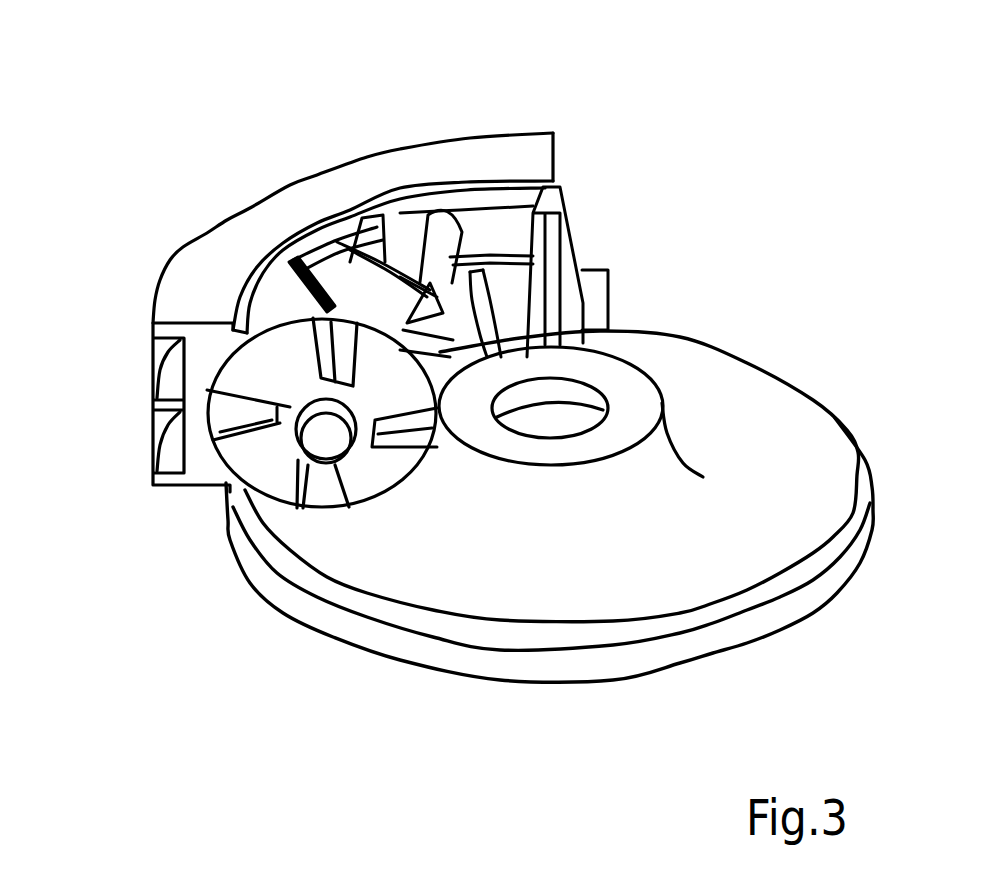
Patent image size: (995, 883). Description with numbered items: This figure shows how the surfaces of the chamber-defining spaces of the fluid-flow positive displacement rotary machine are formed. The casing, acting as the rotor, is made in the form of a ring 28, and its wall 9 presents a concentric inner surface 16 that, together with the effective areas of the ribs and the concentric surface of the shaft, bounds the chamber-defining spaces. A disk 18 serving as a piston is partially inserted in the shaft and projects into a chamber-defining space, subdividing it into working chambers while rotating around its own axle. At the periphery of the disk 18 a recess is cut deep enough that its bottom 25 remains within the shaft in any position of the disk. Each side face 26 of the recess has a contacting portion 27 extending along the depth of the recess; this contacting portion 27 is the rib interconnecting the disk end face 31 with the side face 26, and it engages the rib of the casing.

The wall 9 is at (743, 280).
The concentric inner surface 16 is at (702, 383).
The disk 18 is at (353, 227).
The bottom 25 is at (447, 262).
The side face 26 is at (382, 435).
The contacting portion 27 is at (423, 450).
The ring 28 is at (218, 256).
The disk end face 31 is at (420, 233).